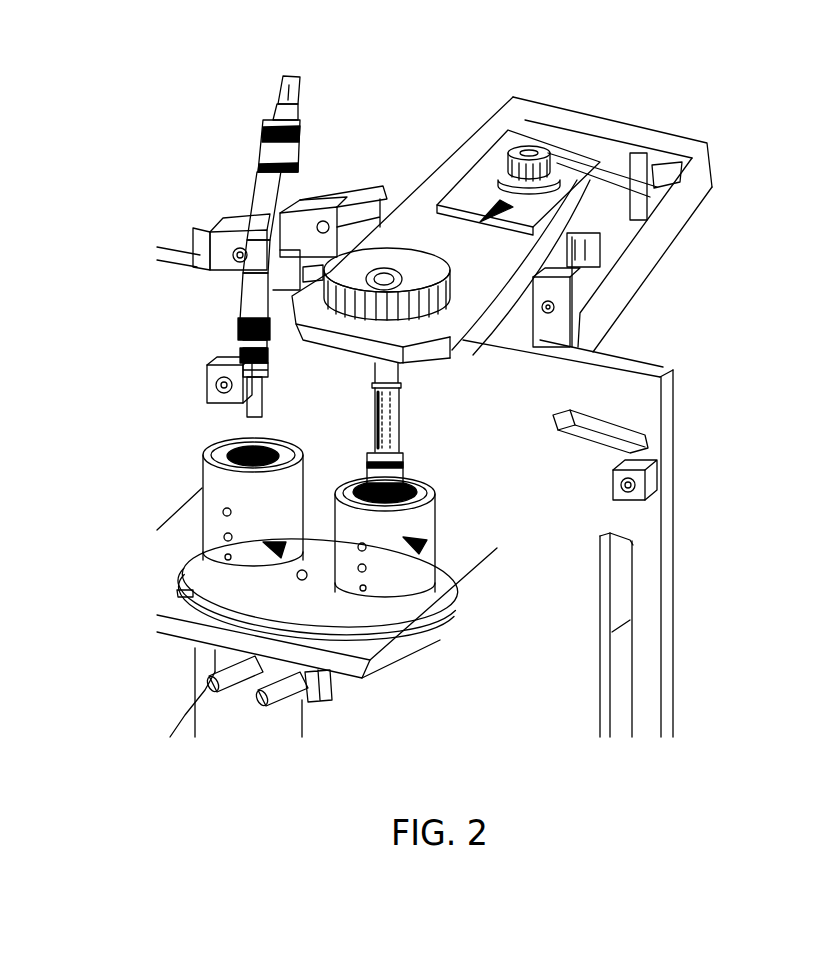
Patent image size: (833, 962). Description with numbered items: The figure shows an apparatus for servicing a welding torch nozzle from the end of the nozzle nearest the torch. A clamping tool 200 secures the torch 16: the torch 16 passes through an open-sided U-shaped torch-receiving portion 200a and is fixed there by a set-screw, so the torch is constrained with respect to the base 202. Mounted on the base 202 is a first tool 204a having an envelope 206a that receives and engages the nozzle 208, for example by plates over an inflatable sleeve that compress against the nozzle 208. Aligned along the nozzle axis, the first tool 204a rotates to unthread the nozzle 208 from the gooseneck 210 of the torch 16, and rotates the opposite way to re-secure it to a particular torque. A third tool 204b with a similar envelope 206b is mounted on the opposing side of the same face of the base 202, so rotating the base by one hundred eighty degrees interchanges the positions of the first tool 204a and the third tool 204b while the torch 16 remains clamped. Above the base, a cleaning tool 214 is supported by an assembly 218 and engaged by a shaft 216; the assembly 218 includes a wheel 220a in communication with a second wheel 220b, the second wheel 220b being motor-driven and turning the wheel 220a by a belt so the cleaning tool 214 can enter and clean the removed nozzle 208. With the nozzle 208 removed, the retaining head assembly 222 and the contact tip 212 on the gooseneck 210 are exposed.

The torch 16 is at (260, 180).
The clamping tool 200 is at (223, 255).
The torch-receiving portion 200a is at (212, 231).
The base 202 is at (353, 608).
The first tool 204a is at (423, 547).
The third tool 204b is at (283, 550).
The envelope 206a is at (433, 492).
The envelope 206b is at (225, 455).
The nozzle 208 is at (403, 470).
The gooseneck 210 is at (243, 318).
The contact tip 212 is at (261, 407).
The cleaning tool 214 is at (397, 413).
The shaft 216 is at (387, 372).
The assembly 218 is at (498, 258).
The wheel 220a is at (417, 250).
The second wheel 220b is at (528, 148).
The retaining head assembly 222 is at (238, 364).